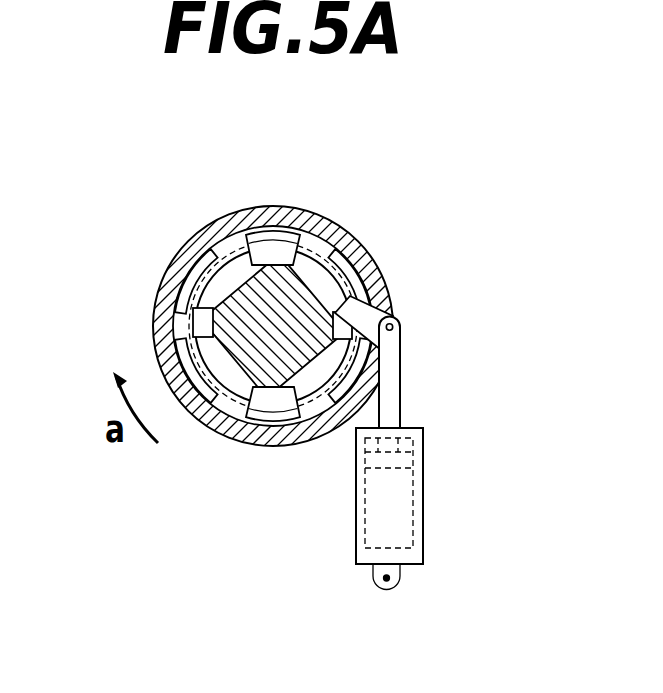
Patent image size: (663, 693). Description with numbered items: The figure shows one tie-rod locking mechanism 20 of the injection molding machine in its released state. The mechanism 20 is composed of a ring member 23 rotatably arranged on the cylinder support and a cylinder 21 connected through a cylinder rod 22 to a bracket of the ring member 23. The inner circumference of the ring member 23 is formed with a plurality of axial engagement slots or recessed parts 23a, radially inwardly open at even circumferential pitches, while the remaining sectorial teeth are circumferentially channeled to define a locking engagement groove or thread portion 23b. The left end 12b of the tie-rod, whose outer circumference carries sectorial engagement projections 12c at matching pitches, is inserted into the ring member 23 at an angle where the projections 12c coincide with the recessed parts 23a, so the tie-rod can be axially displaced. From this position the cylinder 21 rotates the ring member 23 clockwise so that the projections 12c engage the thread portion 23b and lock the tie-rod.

The tie-rod locking mechanism 20 is at (178, 223).
The ring member 23 is at (183, 270).
The recessed parts 23a is at (154, 312).
The thread portion 23b is at (310, 250).
The projections 12c is at (298, 251).
The left end of tie-rod 12b is at (300, 302).
The cylinder rod 22 is at (380, 380).
The cylinder 21 is at (423, 525).